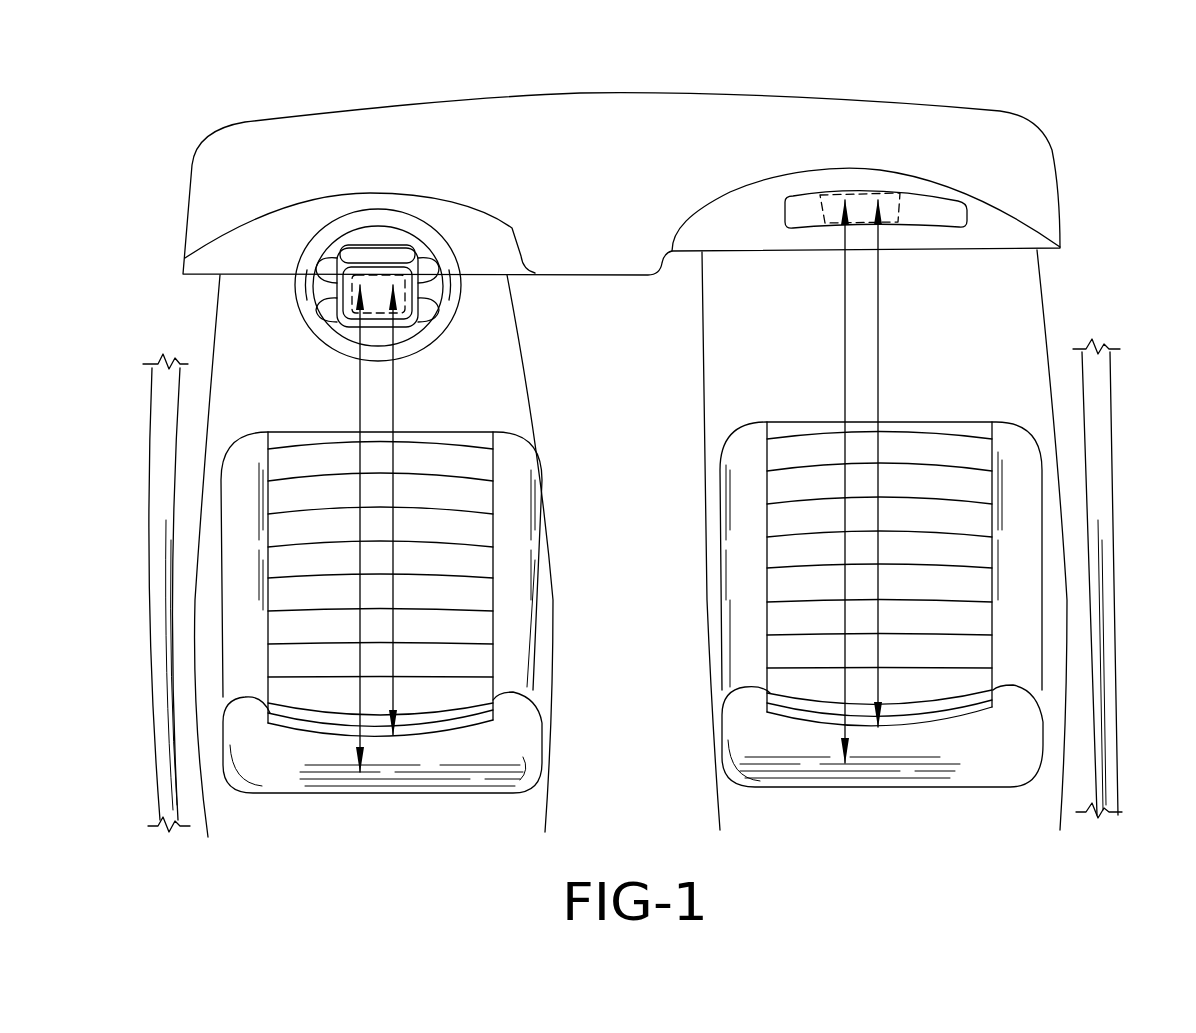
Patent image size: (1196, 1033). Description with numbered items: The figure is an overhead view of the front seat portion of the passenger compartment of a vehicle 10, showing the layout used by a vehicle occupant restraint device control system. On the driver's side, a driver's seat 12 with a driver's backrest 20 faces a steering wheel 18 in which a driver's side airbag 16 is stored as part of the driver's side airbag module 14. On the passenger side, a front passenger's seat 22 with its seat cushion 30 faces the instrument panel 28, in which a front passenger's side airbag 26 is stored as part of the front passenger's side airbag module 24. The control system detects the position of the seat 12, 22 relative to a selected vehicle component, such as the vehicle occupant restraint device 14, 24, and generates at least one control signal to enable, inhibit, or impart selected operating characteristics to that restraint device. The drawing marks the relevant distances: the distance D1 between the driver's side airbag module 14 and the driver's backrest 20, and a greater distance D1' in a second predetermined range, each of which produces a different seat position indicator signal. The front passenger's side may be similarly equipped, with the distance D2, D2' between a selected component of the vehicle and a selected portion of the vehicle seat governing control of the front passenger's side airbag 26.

The vehicle 10 is at (1117, 177).
The driver's seat 12 is at (220, 594).
The driver's side airbag module 14 is at (334, 290).
The driver's side airbag 16 is at (381, 274).
The steering wheel 18 is at (333, 225).
The driver's backrest 20 is at (303, 758).
The front passenger's seat 22 is at (1043, 578).
The front passenger's side airbag module 24 is at (918, 186).
The front passenger's side airbag 26 is at (833, 194).
The instrument panel 28 is at (1016, 237).
The passenger seat cushion 30 is at (960, 748).
The distance D1 is at (440, 510).
The distance D1' is at (314, 528).
The distance D2 is at (928, 463).
The distance D2' is at (793, 481).